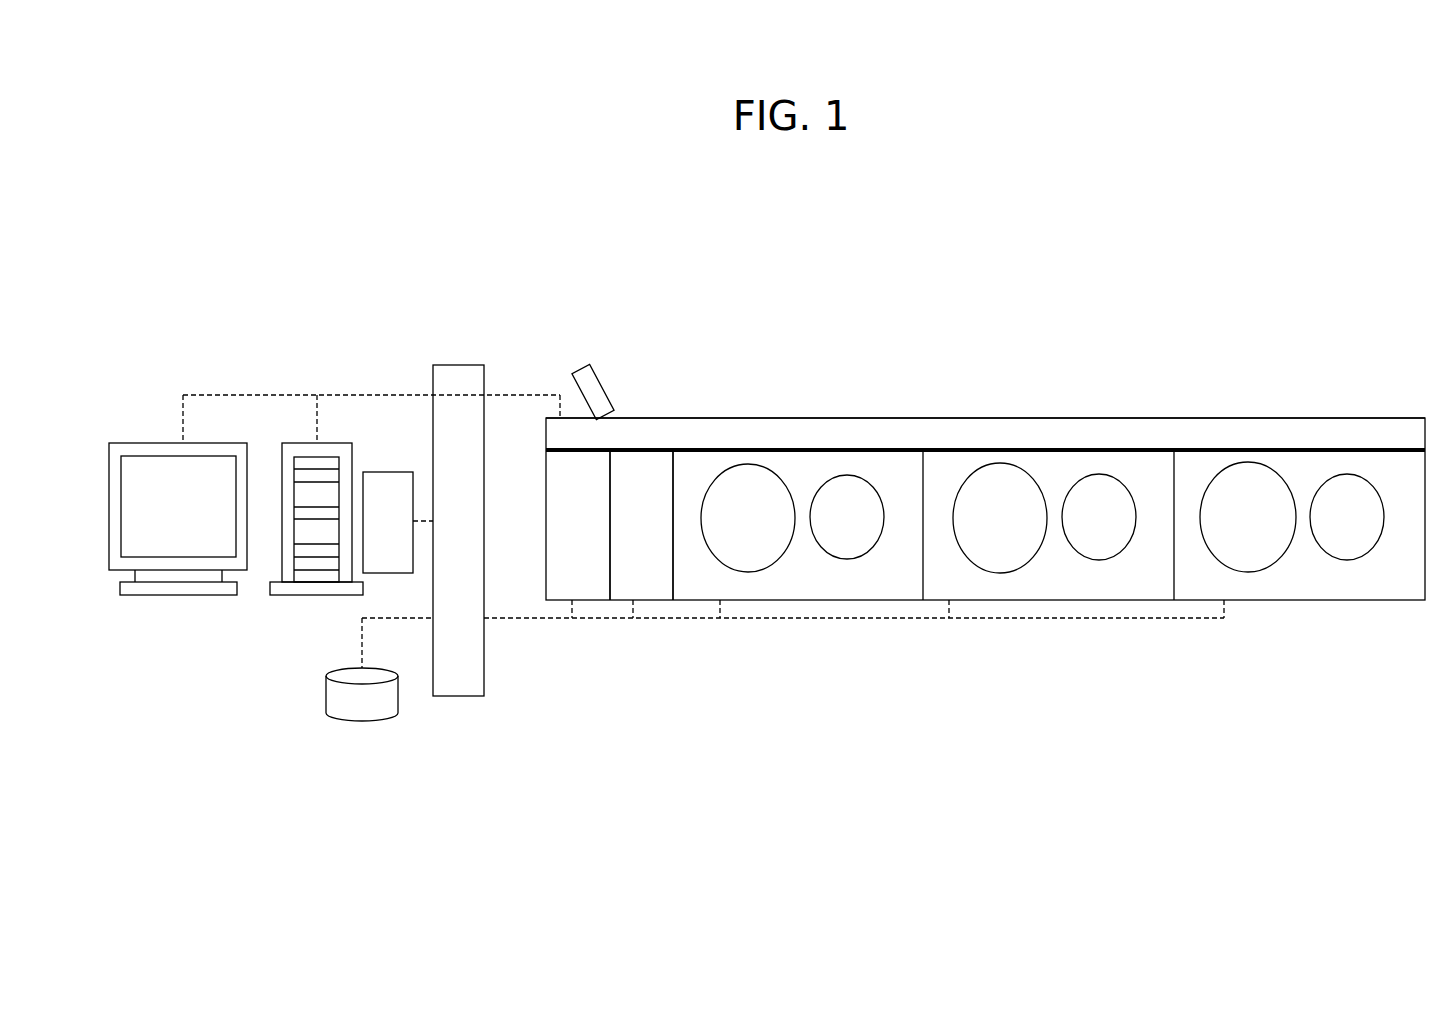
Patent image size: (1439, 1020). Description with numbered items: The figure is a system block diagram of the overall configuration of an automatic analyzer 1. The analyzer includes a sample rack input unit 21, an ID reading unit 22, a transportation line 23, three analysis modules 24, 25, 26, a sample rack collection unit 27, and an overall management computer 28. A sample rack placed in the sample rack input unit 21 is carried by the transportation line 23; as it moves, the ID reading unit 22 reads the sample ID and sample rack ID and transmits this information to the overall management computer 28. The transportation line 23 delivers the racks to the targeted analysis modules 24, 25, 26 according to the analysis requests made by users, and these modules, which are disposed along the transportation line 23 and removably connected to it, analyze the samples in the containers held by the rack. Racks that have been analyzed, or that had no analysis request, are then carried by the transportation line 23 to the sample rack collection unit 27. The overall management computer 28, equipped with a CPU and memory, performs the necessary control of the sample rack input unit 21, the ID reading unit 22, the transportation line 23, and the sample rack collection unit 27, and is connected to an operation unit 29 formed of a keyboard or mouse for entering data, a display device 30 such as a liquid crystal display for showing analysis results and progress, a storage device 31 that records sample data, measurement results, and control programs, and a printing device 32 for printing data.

The automatic analyzer 1 is at (958, 462).
The sample rack input unit 21 is at (555, 517).
The ID reading unit 22 is at (588, 365).
The transportation line 23 is at (732, 428).
The analysis module 24 is at (793, 600).
The analysis module 25 is at (1040, 600).
The analysis module 26 is at (1299, 600).
The sample rack collection unit 27 is at (648, 600).
The overall management computer 28 is at (457, 696).
The operation unit 29 is at (329, 595).
The display device 30 is at (172, 595).
The storage device 31 is at (362, 713).
The printing device 32 is at (387, 472).